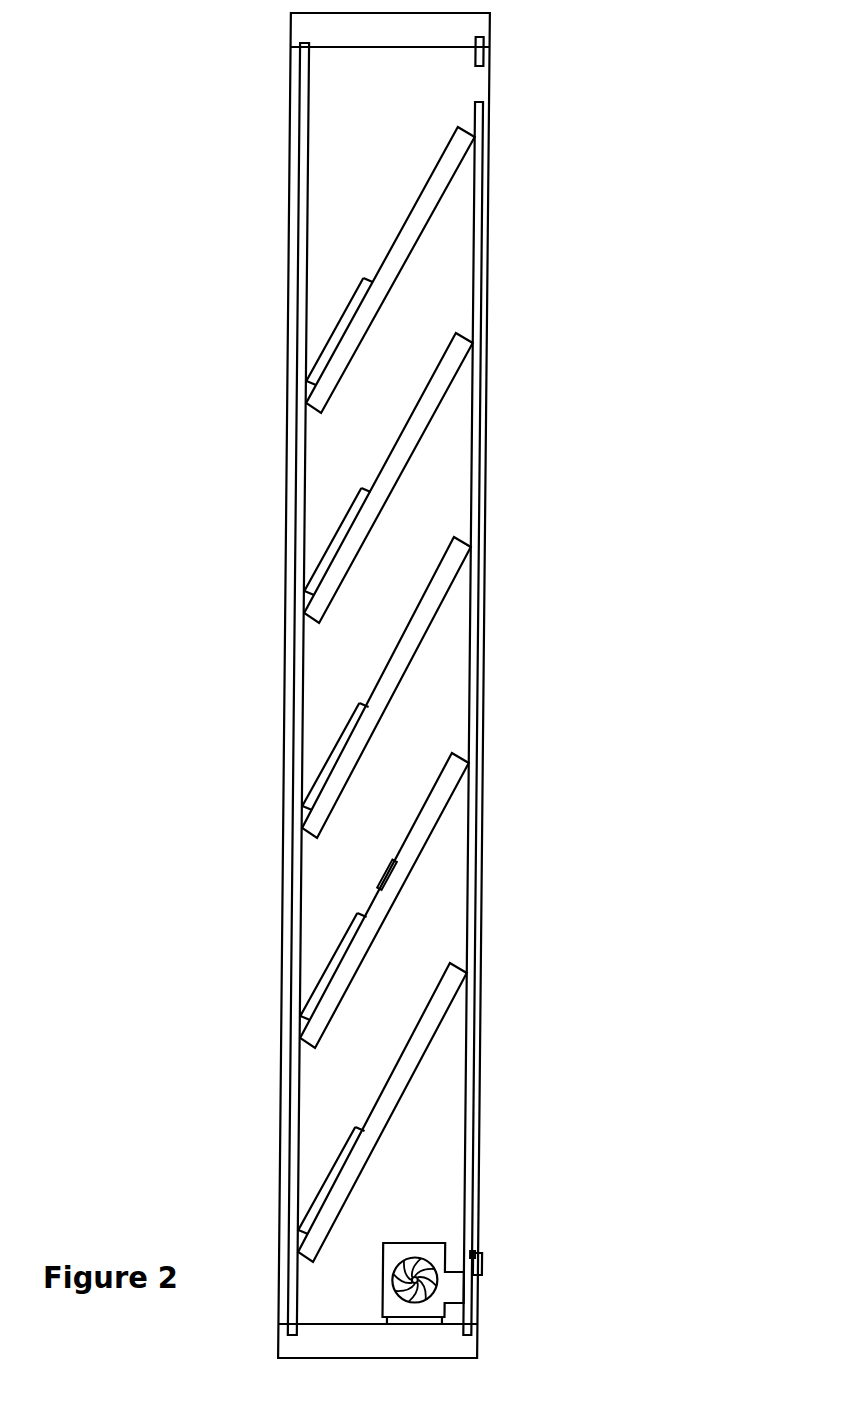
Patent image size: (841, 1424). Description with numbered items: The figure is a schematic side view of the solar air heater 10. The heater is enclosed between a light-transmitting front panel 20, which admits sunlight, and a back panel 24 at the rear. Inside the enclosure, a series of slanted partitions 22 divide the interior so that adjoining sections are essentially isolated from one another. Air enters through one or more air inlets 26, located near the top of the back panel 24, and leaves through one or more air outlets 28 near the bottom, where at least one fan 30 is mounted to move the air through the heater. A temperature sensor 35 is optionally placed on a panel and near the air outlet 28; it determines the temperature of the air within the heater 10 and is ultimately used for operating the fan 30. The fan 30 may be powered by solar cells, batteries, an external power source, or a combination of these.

The solar air heater 10 is at (450, 685).
The light-transmitting front panel 20 is at (270, 1134).
The partition 22 is at (375, 249).
The back panel 24 is at (488, 1142).
The air inlet 26 is at (490, 88).
The air outlet 28 is at (488, 1284).
The fan 30 is at (445, 1292).
The temperature sensor 35 is at (462, 1249).